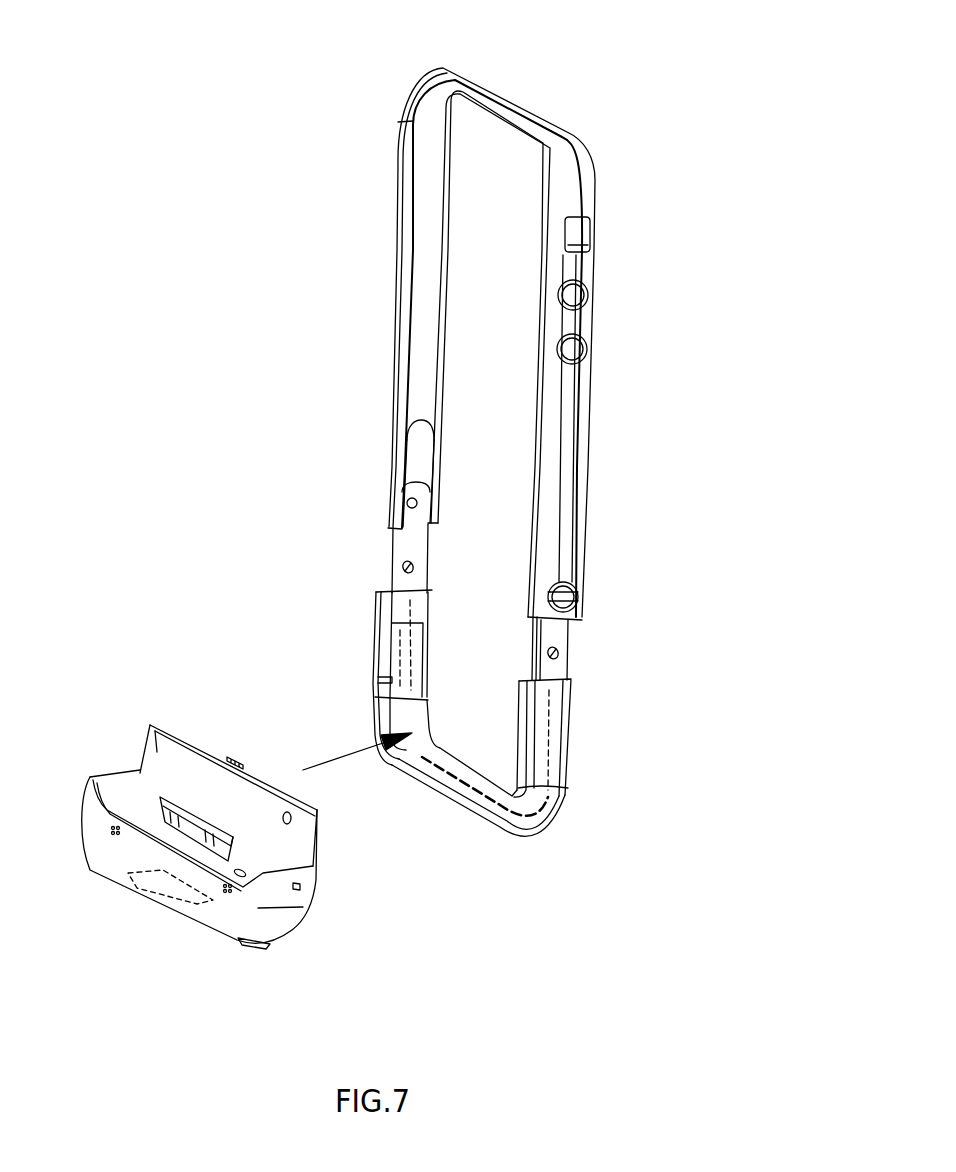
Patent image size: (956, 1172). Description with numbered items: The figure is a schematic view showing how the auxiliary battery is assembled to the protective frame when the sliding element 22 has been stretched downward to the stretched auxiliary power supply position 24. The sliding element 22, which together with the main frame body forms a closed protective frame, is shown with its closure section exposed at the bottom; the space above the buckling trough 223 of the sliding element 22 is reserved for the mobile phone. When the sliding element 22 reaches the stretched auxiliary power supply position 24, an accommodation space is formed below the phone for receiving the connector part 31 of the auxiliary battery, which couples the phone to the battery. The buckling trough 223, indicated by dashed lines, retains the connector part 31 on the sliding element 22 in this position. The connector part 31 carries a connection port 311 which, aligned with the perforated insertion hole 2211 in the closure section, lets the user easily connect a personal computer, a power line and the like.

The sliding element 22 is at (520, 515).
The stretched auxiliary power supply position 24 is at (411, 760).
The buckling trough 223 is at (540, 757).
The perforated insertion hole 2211 is at (493, 803).
The connector part 31 is at (178, 768).
The connection port 311 is at (122, 888).